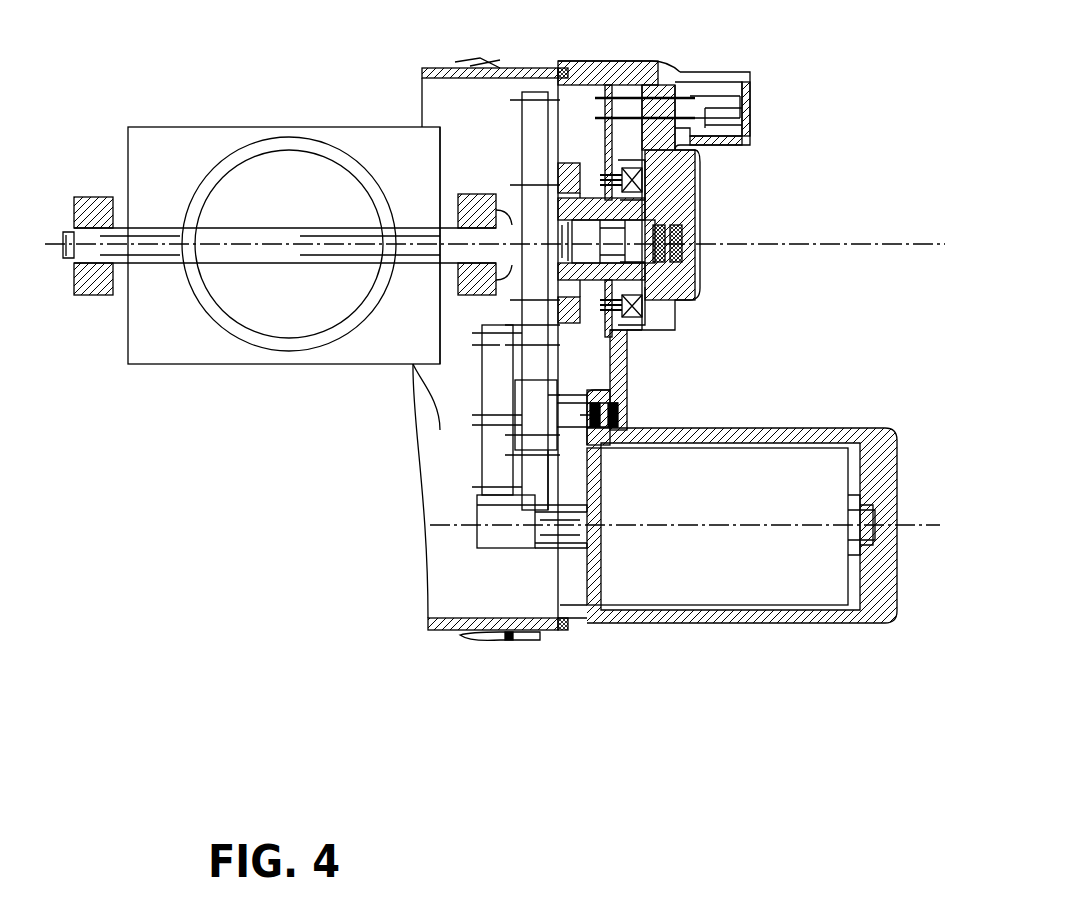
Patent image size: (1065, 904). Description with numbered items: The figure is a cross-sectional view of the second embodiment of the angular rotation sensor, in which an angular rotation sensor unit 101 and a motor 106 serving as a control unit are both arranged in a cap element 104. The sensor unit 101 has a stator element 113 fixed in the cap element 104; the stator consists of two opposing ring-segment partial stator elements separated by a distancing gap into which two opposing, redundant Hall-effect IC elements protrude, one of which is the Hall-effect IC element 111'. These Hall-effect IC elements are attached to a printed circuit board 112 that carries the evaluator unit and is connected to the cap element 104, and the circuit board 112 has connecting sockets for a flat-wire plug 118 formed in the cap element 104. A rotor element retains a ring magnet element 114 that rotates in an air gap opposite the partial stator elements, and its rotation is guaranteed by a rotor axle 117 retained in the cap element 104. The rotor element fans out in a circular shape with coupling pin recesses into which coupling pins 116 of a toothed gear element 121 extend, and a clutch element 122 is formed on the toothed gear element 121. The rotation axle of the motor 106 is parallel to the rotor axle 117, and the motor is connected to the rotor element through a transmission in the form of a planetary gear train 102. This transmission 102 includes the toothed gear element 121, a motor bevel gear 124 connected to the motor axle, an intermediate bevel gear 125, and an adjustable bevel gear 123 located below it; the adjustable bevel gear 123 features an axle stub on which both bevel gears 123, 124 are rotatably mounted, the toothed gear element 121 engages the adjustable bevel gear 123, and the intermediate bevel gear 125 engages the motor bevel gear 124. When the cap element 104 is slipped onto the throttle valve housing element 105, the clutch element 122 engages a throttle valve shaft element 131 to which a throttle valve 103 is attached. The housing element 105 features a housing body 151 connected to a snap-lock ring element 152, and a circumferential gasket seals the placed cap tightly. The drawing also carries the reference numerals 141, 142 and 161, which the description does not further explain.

The angular rotation sensor unit 101 is at (640, 64).
The planetary gear train 102 is at (493, 465).
The throttle valve 103 is at (233, 320).
The cap element 104 is at (618, 358).
The throttle valve housing element 105 is at (445, 438).
The motor 106 is at (727, 573).
The Hall-effect IC element 111' is at (734, 211).
The printed circuit board 112 is at (700, 162).
The stator element 113 is at (645, 188).
The ring magnet element 114 is at (622, 238).
The coupling pins 116 is at (578, 168).
The rotor axle 117 is at (700, 262).
The flat-wire plug 118 is at (706, 55).
The toothed gear element 121 is at (520, 130).
The clutch element 122 is at (458, 285).
The adjustable bevel gear 123 is at (540, 443).
The motor bevel gear 124 is at (487, 553).
The intermediate bevel gear 125 is at (482, 347).
The throttle valve shaft element 131 is at (150, 237).
The motor casing 141 is at (697, 434).
The lip seal 142 is at (483, 640).
The housing body 151 is at (455, 75).
The snap-lock ring element 152 is at (561, 66).
The end cap 161 is at (808, 618).